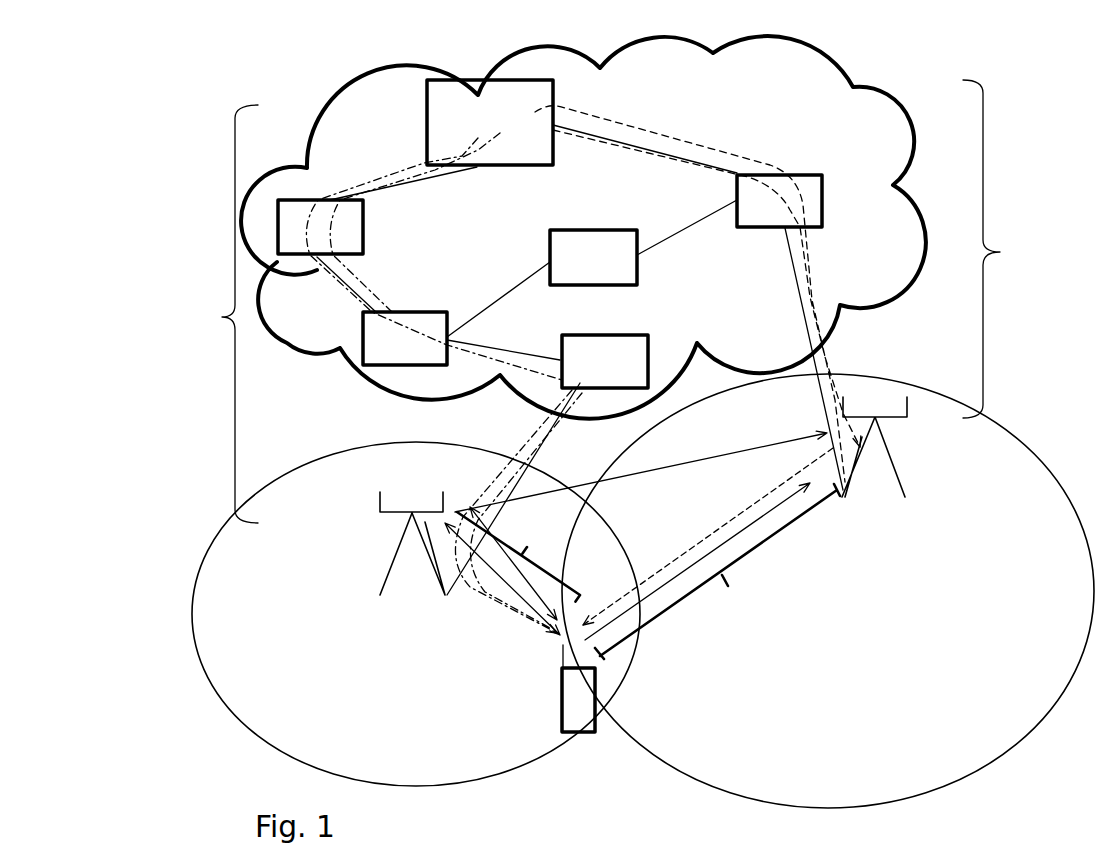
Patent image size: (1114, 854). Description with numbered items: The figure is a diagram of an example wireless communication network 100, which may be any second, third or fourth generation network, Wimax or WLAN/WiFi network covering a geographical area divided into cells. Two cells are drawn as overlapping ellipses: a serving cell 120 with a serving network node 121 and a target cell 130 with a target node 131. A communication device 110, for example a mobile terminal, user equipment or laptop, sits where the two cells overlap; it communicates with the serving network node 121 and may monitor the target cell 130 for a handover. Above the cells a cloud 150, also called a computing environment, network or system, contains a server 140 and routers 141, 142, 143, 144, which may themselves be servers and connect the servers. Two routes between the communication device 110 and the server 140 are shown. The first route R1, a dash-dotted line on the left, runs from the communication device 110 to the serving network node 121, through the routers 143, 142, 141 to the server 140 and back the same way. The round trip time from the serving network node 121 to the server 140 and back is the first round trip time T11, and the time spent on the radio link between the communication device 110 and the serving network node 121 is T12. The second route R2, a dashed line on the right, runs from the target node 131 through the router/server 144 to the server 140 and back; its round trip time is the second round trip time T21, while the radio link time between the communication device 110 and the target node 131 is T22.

The wireless communication network 100 is at (832, 699).
The communication device 110 is at (600, 718).
The serving cell 120 is at (362, 683).
The serving network node 121 is at (380, 505).
The target cell 130 is at (967, 595).
The target node 131 is at (907, 399).
The server 140 is at (443, 87).
The router 141 is at (357, 248).
The router 142 is at (420, 323).
The router 143 is at (620, 360).
The router 144 is at (810, 187).
The cloud 150 is at (776, 100).
The first round trip time T11 is at (205, 314).
The radio link time T12 is at (522, 557).
The second round trip time T21 is at (1009, 249).
The radio link time T22 is at (717, 571).
The first route R1 is at (340, 297).
The second route R2 is at (827, 253).